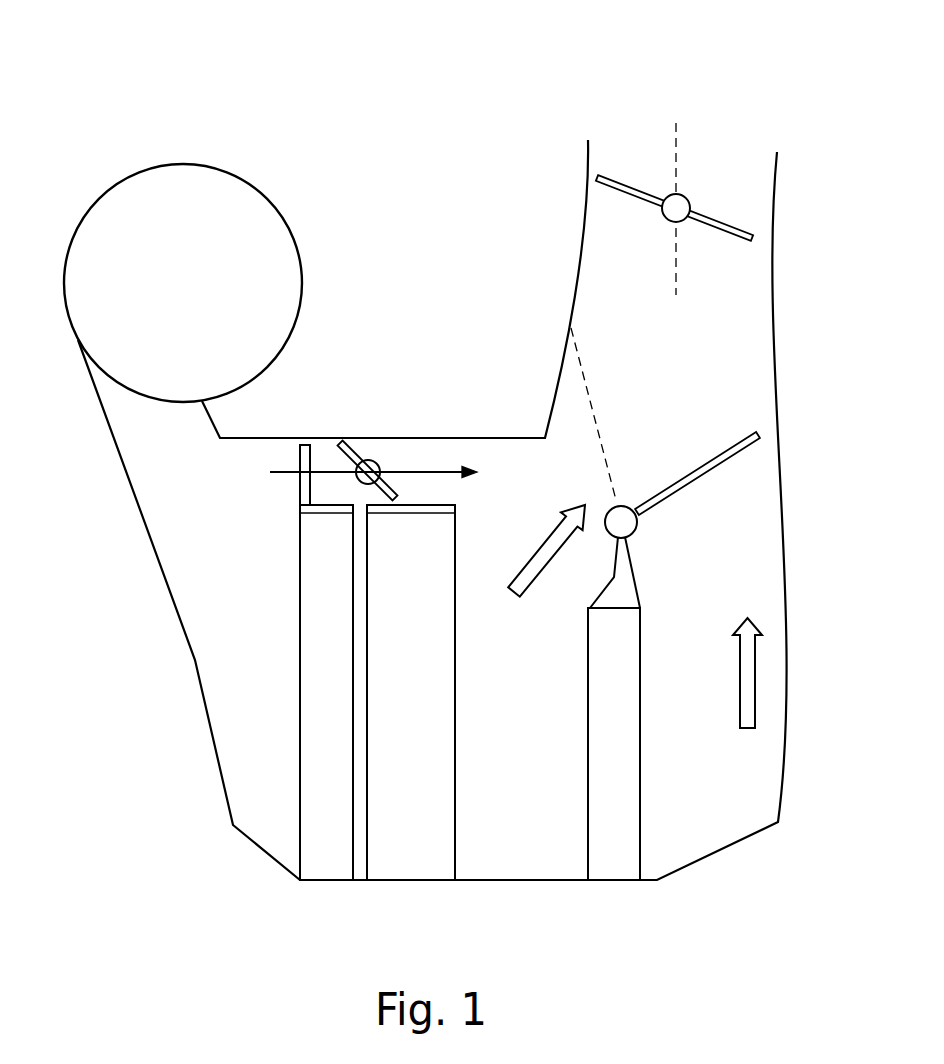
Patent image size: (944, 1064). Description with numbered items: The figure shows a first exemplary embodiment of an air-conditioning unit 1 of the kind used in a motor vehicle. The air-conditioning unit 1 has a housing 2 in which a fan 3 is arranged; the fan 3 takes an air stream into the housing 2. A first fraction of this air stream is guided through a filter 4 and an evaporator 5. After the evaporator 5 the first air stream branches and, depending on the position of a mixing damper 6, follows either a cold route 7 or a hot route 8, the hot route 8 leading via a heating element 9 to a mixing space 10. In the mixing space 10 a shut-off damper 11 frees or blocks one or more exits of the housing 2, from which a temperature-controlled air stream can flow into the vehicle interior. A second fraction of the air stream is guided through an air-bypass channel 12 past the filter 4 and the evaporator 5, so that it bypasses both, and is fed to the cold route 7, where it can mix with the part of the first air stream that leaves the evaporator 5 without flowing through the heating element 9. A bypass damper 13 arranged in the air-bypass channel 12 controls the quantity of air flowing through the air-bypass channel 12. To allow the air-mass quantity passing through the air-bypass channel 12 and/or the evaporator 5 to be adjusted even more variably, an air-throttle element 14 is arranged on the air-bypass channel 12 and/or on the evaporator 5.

The air-conditioning unit 1 is at (232, 94).
The housing 2 is at (175, 612).
The fan 3 is at (122, 203).
The filter 4 is at (300, 847).
The evaporator 5 is at (368, 848).
The mixing damper 6 is at (733, 455).
The cold route 7 is at (535, 552).
The hot route 8 is at (757, 680).
The heating element 9 is at (642, 847).
The mixing space 10 is at (752, 322).
The shut-off damper 11 is at (745, 228).
The air-bypass channel 12 is at (398, 475).
The bypass damper 13 is at (325, 452).
The air-throttle element 14 is at (305, 465).